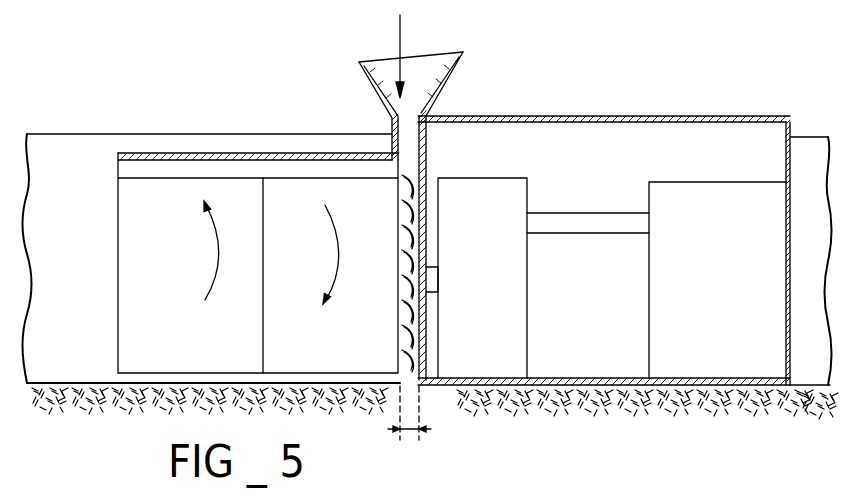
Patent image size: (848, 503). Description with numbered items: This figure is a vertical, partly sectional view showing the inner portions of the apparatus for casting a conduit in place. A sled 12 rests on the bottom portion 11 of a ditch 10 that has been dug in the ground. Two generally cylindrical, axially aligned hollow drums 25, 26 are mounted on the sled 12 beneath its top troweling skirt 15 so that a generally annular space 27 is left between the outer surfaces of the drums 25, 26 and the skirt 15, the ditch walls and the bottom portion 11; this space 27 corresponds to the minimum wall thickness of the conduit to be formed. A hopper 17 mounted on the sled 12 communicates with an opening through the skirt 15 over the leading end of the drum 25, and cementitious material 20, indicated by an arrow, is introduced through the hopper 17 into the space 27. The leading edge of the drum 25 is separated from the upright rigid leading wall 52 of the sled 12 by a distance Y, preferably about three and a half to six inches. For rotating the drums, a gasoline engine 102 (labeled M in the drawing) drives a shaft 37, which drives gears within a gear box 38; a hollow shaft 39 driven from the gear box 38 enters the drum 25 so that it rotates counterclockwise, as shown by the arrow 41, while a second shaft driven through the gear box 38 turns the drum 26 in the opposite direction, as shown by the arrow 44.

The ditch 10 is at (791, 160).
The bottom portion 11 is at (441, 386).
The sled 12 is at (617, 108).
The top troweling skirt 15 is at (216, 157).
The hopper 17 is at (352, 90).
The cementitious material 20 is at (403, 33).
The drum 25 is at (314, 359).
The drum 26 is at (164, 357).
The annular space 27 is at (149, 170).
The shaft 37 is at (590, 220).
The gear box 38 is at (504, 192).
The hollow shaft 39 is at (434, 284).
The arrow 41 is at (345, 236).
The arrow 44 is at (222, 262).
The leading wall 52 is at (443, 170).
The gasoline engine 102 is at (669, 198).
The motor M is at (727, 270).
The distance Y is at (408, 437).